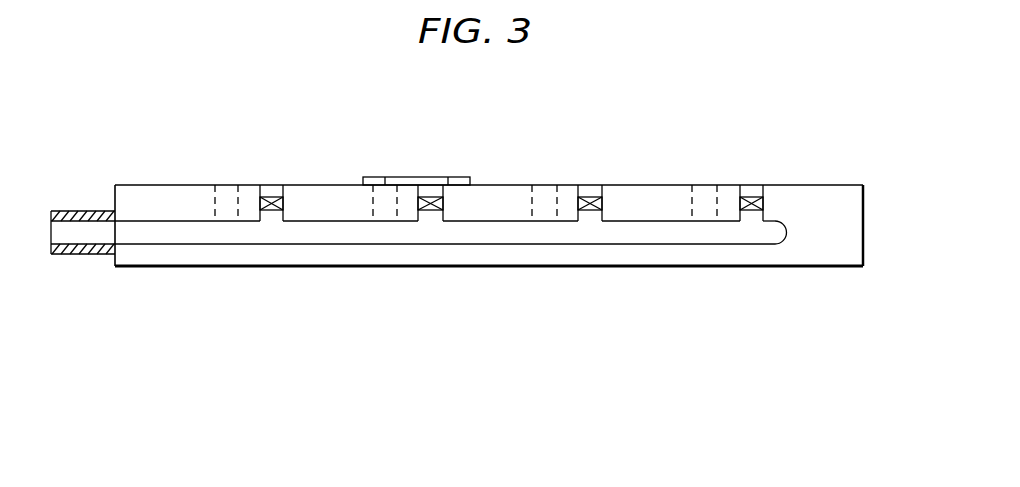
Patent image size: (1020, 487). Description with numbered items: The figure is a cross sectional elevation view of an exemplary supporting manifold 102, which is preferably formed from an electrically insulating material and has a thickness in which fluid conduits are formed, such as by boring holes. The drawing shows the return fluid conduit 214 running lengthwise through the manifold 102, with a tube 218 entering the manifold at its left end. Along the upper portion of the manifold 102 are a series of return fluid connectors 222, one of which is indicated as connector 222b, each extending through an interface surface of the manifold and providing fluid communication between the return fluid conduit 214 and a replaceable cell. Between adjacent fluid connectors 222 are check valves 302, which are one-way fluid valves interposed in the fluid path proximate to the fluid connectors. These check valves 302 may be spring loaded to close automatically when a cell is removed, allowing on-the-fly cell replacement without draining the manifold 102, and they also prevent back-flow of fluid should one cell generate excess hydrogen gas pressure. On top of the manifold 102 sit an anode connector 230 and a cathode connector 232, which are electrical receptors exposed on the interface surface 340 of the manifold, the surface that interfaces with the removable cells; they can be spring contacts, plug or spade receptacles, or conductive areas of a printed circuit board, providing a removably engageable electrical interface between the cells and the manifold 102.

The supporting manifold 102 is at (884, 192).
The return fluid conduit 214 is at (133, 244).
The tube 218 is at (78, 210).
The return fluid connector 222 is at (273, 185).
The sensor element 222b is at (220, 185).
The anode connector 230 is at (392, 177).
The cathode connector 232 is at (457, 177).
The check valve 302 is at (283, 207).
The interface surface 340 is at (807, 186).